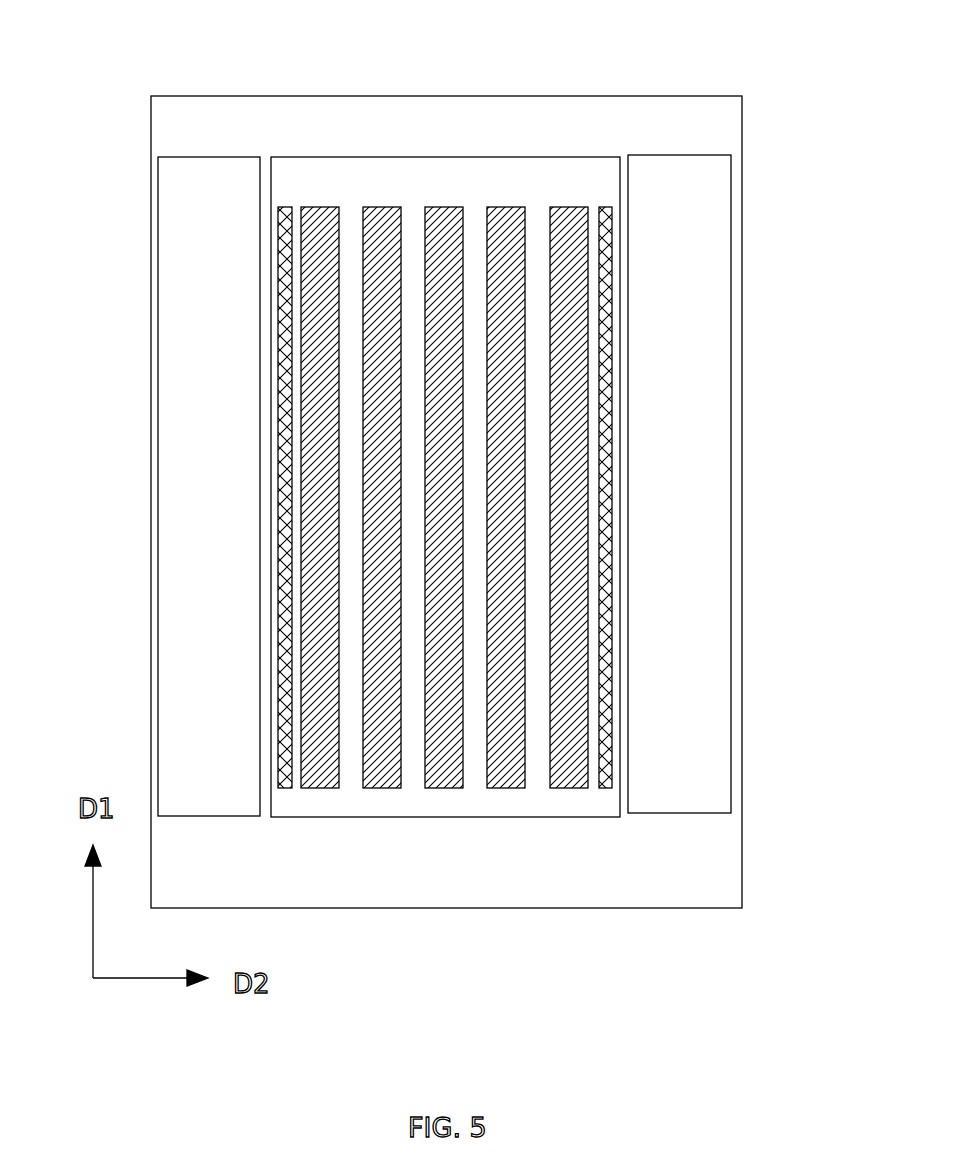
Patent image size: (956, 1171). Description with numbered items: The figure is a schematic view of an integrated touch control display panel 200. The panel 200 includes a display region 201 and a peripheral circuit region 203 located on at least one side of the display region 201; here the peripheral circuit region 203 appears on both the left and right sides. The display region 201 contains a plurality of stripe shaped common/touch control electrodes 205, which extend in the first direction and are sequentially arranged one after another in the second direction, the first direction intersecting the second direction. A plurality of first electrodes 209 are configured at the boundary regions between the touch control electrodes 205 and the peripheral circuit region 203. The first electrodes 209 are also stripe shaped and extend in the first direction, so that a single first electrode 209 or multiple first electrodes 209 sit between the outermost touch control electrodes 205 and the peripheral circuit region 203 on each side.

The integrated touch control display panel 200 is at (128, 27).
The display region 201 is at (512, 173).
The peripheral circuit region 203 is at (219, 180).
The common/touch control electrodes 205 is at (390, 207).
The first electrodes 209 is at (282, 222).